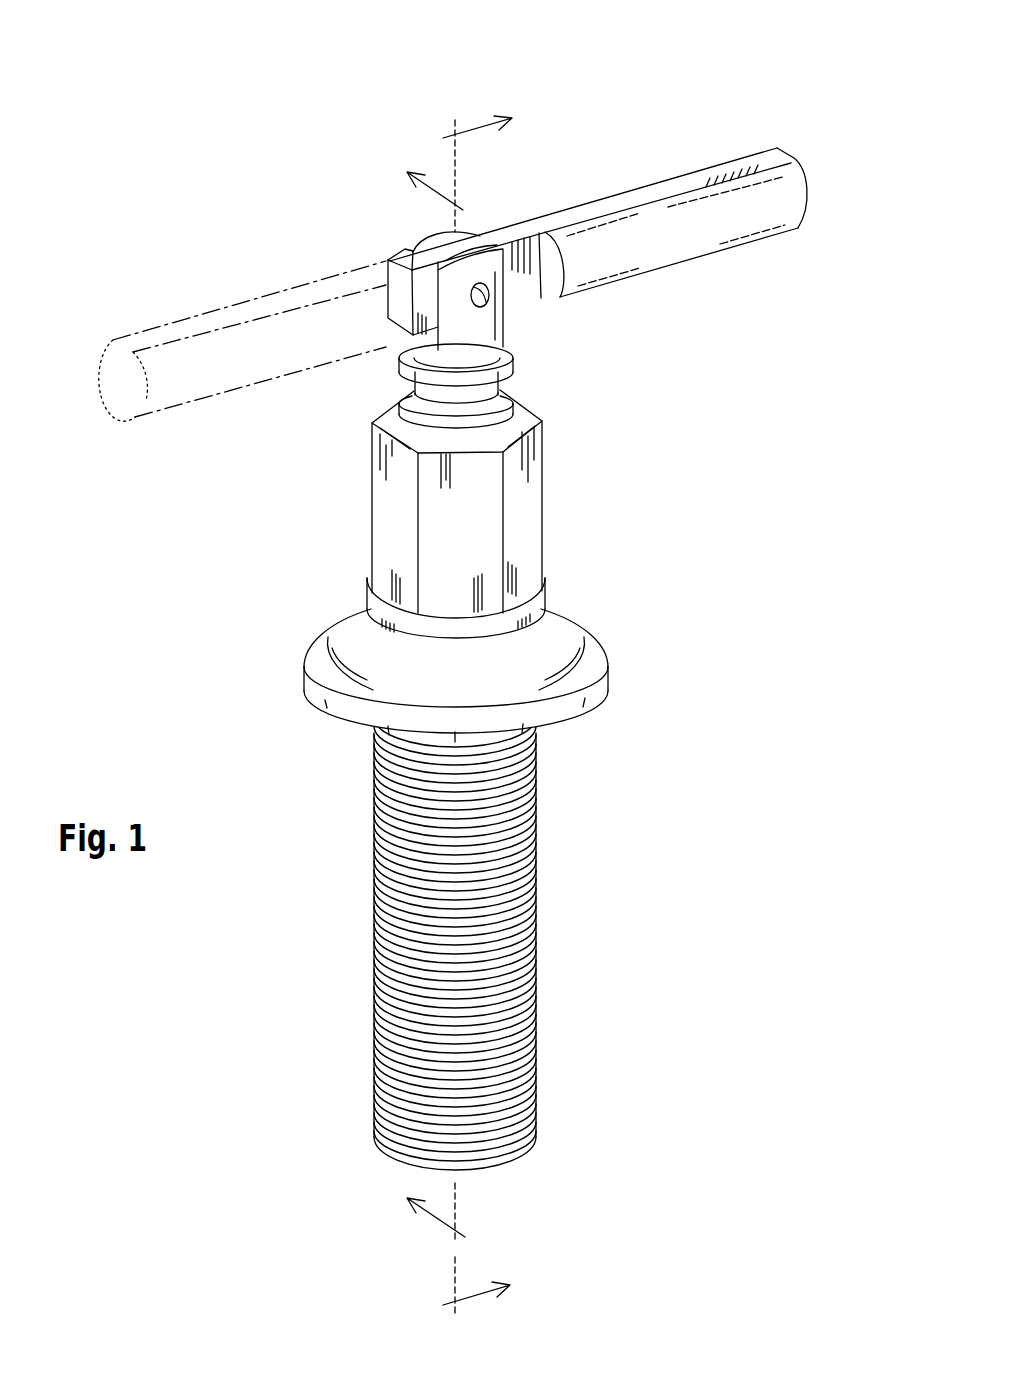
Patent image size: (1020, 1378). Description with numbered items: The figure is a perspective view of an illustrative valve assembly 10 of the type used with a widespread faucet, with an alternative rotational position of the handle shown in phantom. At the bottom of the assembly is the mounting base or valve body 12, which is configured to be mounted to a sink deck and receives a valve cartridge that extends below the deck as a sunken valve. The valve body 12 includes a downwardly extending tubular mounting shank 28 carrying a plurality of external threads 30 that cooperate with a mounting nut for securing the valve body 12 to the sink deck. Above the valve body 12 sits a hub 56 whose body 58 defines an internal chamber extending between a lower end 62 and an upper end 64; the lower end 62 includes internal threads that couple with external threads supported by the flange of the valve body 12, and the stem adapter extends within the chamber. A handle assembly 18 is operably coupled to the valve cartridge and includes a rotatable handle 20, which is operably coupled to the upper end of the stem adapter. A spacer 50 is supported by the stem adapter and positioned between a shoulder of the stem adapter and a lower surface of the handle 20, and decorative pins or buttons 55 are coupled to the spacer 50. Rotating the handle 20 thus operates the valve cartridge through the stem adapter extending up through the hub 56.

The valve assembly 10 is at (292, 143).
The valve body 12 is at (348, 1023).
The handle assembly 18 is at (637, 178).
The handle 20 is at (717, 252).
The mounting shank 28 is at (536, 1022).
The external threads 30 is at (536, 874).
The spacer 50 is at (482, 330).
The decorative pins or buttons 55 is at (487, 294).
The hub 56 is at (358, 527).
The body 58 is at (527, 522).
The lower end 62 is at (603, 688).
The upper end 64 is at (405, 360).